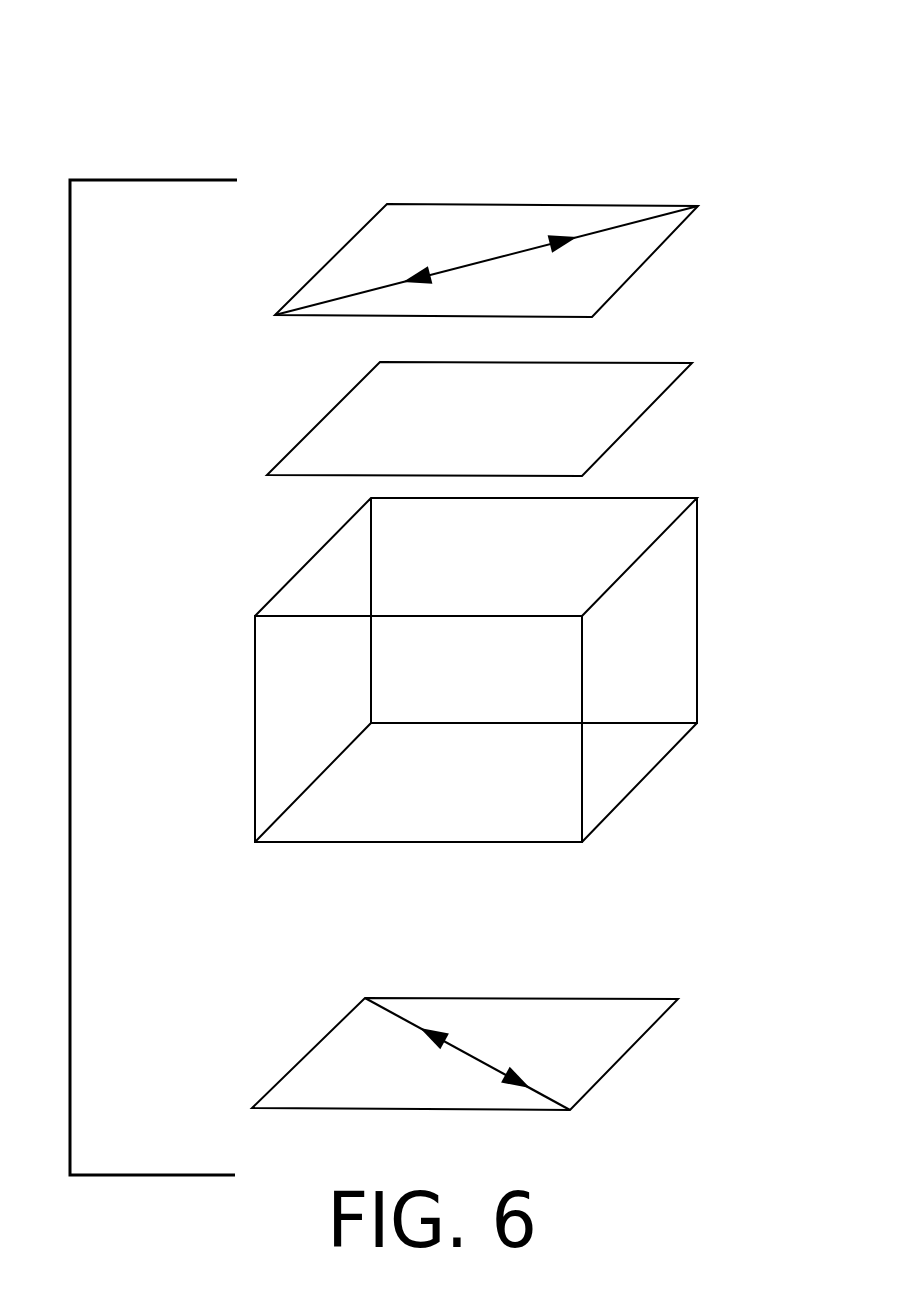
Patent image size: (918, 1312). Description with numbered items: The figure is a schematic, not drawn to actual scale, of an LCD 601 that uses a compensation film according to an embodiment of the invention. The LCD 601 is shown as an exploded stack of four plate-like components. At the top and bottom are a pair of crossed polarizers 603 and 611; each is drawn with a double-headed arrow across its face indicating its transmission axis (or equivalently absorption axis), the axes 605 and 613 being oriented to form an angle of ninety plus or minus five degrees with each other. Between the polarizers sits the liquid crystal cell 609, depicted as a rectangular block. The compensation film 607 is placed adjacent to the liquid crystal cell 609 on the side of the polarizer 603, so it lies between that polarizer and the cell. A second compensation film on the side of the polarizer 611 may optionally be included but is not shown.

The LCD 601 is at (480, 158).
The polarizer 603 is at (637, 202).
The transmission axis 605 is at (467, 263).
The compensation film 607 is at (645, 387).
The liquid crystal cell 609 is at (257, 715).
The polarizer 611 is at (673, 992).
The transmission axis 613 is at (473, 1053).